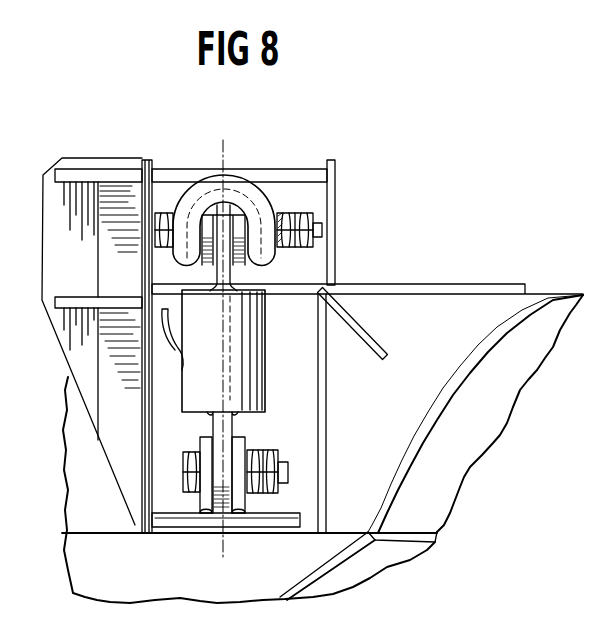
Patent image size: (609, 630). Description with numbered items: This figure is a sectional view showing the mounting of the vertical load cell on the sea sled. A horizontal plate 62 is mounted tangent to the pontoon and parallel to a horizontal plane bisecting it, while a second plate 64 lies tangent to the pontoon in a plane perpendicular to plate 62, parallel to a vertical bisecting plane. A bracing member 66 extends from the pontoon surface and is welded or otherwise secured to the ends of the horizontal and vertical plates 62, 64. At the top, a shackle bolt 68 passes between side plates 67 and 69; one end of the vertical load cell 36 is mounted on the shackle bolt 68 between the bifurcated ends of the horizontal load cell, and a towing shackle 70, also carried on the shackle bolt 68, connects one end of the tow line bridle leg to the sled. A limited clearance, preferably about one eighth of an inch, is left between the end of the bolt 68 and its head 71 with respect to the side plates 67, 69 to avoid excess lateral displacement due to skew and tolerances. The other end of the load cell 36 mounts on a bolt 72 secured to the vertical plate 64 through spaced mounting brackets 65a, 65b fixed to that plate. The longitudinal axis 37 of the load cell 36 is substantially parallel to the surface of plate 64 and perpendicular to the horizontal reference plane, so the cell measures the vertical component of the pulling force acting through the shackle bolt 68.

The vertical load cell 36 is at (253, 382).
The longitudinal axis 37 is at (223, 358).
The plate 62 is at (433, 285).
The second plate 64 is at (307, 426).
The mounting bracket 65a is at (254, 508).
The mounting bracket 65b is at (195, 508).
The bracing member 66 is at (372, 338).
The side plate 67 is at (335, 183).
The shackle bolt 68 is at (316, 222).
The side plate 69 is at (137, 228).
The towing shackle 70 is at (213, 176).
The head 71 is at (166, 212).
The bolt 72 is at (190, 478).